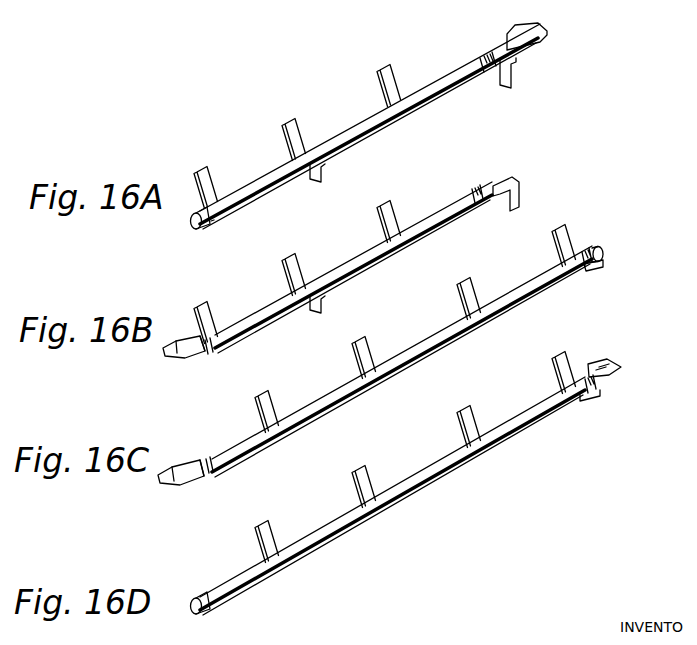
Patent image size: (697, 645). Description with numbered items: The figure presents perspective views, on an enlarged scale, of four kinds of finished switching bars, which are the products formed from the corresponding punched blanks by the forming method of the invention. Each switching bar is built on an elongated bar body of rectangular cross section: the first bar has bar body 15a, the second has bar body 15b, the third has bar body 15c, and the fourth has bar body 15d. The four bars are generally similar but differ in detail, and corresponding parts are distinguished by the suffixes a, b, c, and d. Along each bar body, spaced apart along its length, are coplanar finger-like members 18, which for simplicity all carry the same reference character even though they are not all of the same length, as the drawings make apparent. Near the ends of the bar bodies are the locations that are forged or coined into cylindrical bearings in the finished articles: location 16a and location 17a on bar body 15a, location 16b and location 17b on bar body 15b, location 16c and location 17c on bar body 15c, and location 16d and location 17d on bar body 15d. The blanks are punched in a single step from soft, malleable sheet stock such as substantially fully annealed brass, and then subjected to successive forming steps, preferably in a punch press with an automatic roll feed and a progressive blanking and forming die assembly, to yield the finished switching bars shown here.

In FIG. 16A, the bar body 15a is at (405, 118).
In FIG. 16B, the bar body 15b is at (387, 250).
In FIG. 16C, the bar body 15c is at (397, 376).
In FIG. 16D, the bar body 15d is at (408, 504).
In FIG. 16A, the bearing location 16a is at (203, 230).
In FIG. 16B, the bearing location 16b is at (207, 349).
In FIG. 16C, the bearing location 16c is at (205, 480).
In FIG. 16D, the bearing location 16d is at (204, 613).
In FIG. 16A, the bearing location 17a is at (488, 73).
In FIG. 16B, the bearing location 17b is at (484, 200).
In FIG. 16C, the bearing location 17c is at (604, 255).
In FIG. 16D, the bearing location 17d is at (600, 387).
In FIG. 16A, the finger-like members 18 is at (507, 33).
In FIG. 16B, the finger-like members 18 is at (380, 208).
In FIG. 16C, the finger-like members 18 is at (458, 286).
In FIG. 16D, the finger-like members 18 is at (472, 412).